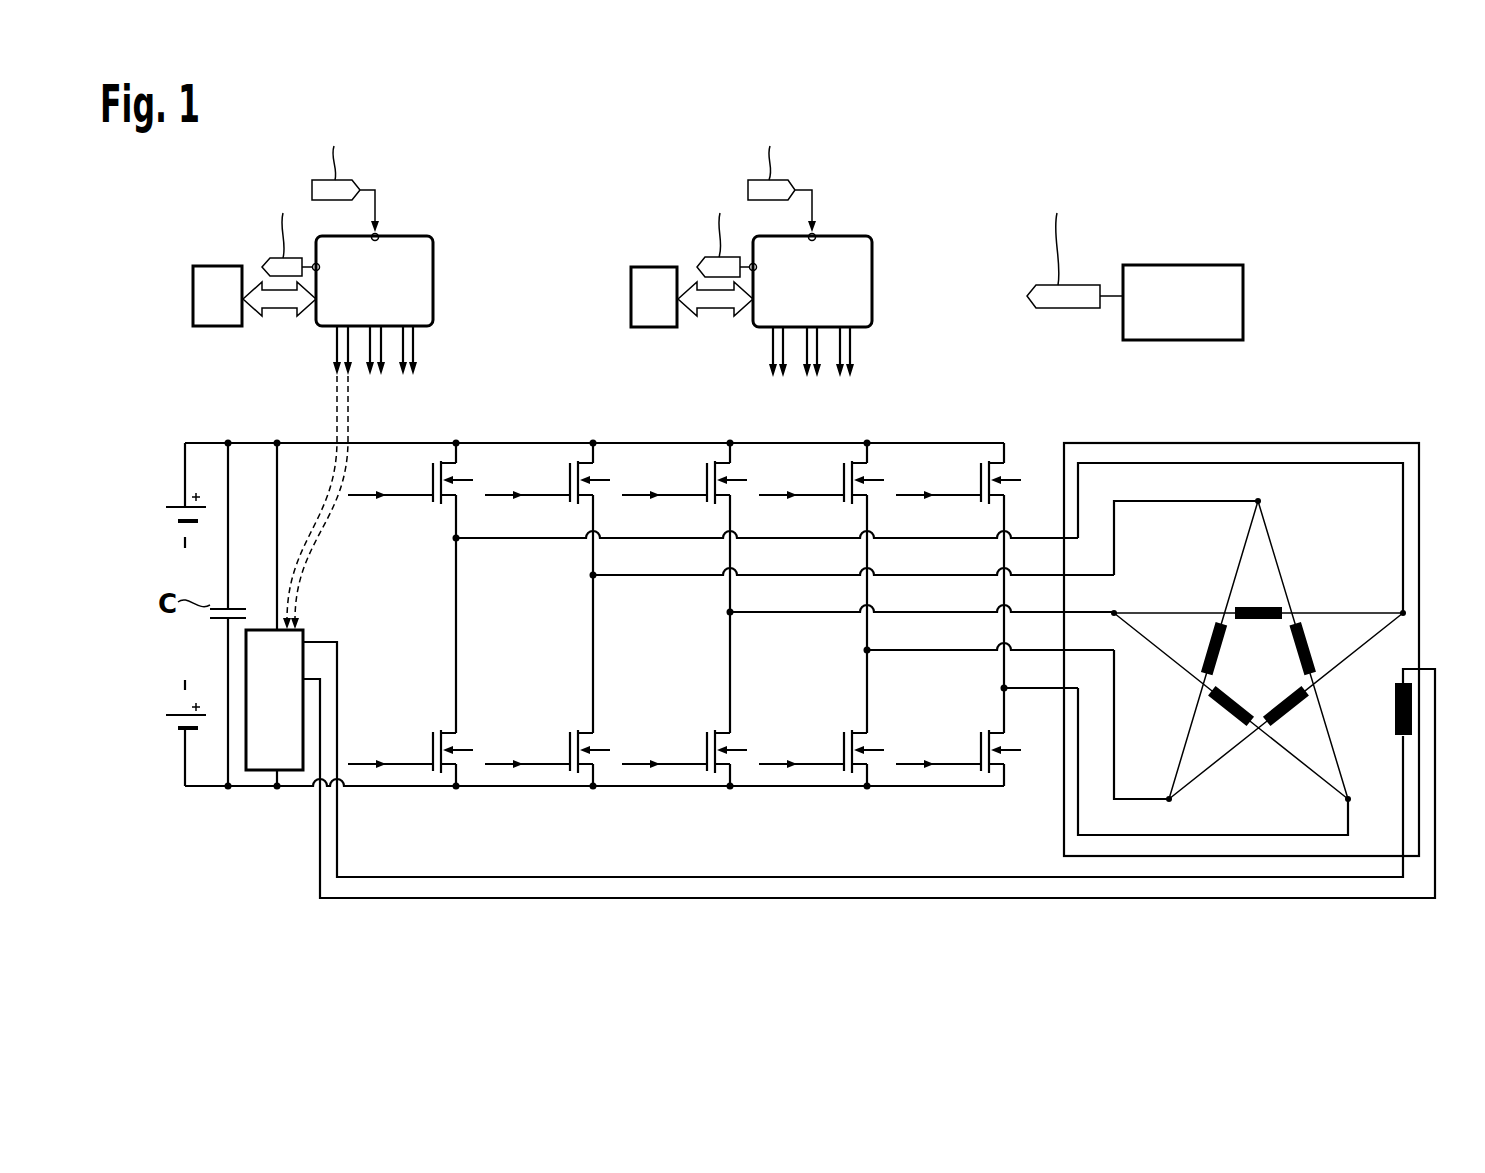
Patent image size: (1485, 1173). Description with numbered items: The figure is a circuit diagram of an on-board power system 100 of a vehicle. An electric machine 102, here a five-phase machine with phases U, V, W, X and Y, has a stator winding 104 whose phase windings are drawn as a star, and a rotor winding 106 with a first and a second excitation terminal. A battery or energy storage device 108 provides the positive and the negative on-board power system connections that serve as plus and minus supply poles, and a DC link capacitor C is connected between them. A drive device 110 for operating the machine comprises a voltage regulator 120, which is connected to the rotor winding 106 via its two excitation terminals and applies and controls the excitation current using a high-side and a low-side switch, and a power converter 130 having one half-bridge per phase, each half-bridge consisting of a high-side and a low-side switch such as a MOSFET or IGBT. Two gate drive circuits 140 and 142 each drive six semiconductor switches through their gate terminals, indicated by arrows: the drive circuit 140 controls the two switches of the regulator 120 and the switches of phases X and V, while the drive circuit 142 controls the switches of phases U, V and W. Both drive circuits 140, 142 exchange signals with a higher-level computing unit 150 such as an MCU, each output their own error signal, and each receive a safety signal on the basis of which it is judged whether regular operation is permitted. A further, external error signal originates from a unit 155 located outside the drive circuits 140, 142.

The on-board power system 100 is at (1367, 175).
The electric machine 102 is at (1355, 443).
The stator winding 104 is at (1306, 589).
The rotor winding 106 is at (1420, 680).
The energy storage device 108 is at (172, 559).
The drive device 110 is at (256, 914).
The voltage regulator 120 is at (246, 660).
The power converter 130 is at (1005, 797).
The drive circuit 140 is at (410, 236).
The drive circuit 142 is at (846, 236).
The computing unit 150 is at (218, 266).
The unit 155 is at (1170, 265).